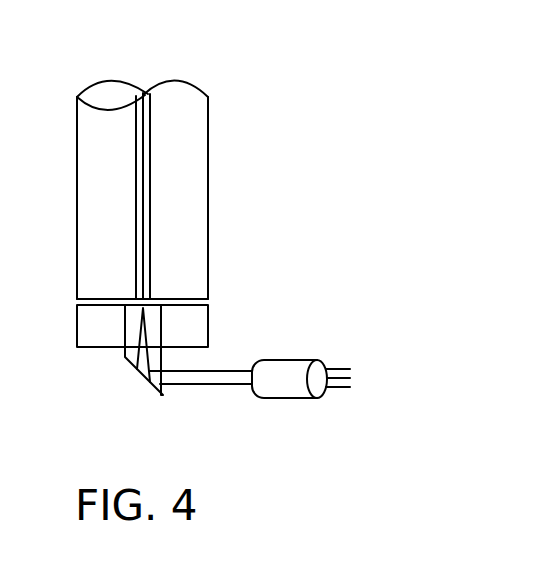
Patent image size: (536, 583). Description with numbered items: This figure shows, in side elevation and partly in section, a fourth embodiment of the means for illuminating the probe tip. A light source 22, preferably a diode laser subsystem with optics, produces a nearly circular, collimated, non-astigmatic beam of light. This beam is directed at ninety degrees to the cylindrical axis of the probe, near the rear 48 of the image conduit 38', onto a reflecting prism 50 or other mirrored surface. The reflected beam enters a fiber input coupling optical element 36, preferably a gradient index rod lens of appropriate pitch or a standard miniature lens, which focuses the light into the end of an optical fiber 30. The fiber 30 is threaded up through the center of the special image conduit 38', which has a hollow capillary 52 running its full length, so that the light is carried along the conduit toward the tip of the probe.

The light source 22 is at (288, 390).
The optical fiber 30 is at (142, 222).
The fiber input coupling optical element 36 is at (125, 332).
The image conduit 38' is at (190, 189).
The rear of the image conduit 48 is at (209, 303).
The reflecting prism 50 is at (144, 378).
The hollow capillary 52 is at (150, 96).